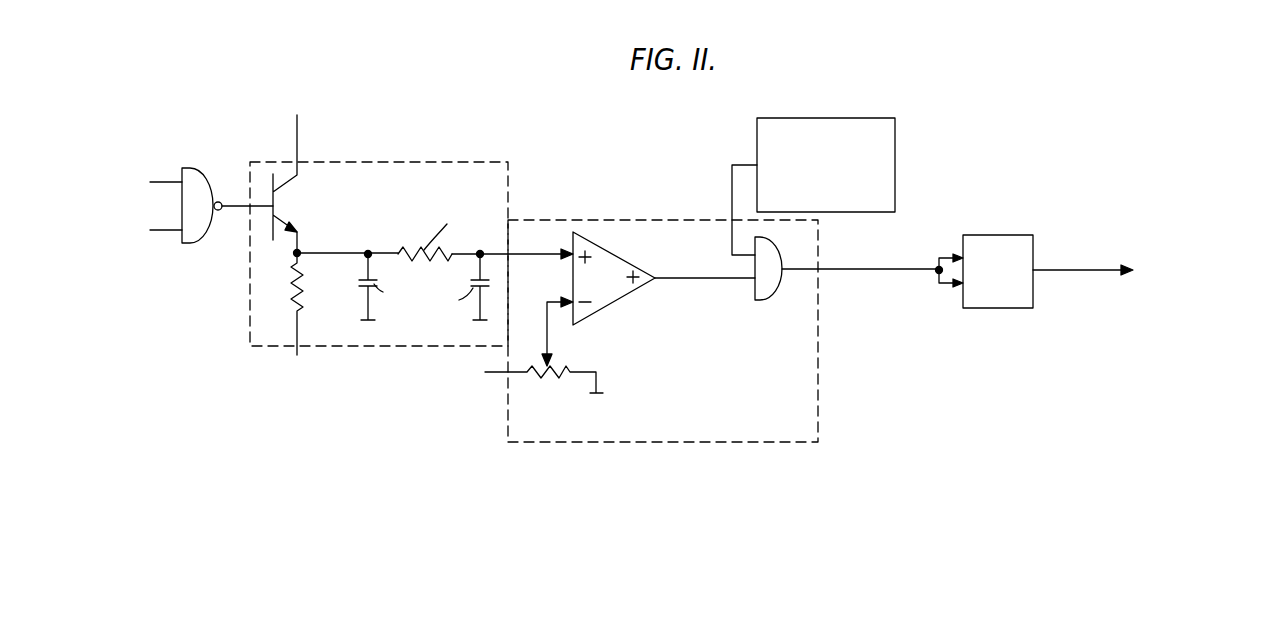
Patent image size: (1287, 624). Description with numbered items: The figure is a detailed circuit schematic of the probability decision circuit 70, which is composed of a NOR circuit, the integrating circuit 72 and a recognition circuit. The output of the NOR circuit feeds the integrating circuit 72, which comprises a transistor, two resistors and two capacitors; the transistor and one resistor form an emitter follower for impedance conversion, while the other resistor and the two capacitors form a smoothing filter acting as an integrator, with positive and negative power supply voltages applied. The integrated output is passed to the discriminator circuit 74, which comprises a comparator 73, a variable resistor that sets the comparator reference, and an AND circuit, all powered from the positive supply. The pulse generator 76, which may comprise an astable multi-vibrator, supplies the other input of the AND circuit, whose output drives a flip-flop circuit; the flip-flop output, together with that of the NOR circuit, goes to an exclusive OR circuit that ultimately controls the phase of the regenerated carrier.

The probability decision circuit 70 is at (947, 134).
The integrating circuit 72 is at (456, 162).
The comparator 73 is at (589, 242).
The discriminator circuit 74 is at (705, 443).
The pulse generator 76 is at (886, 118).